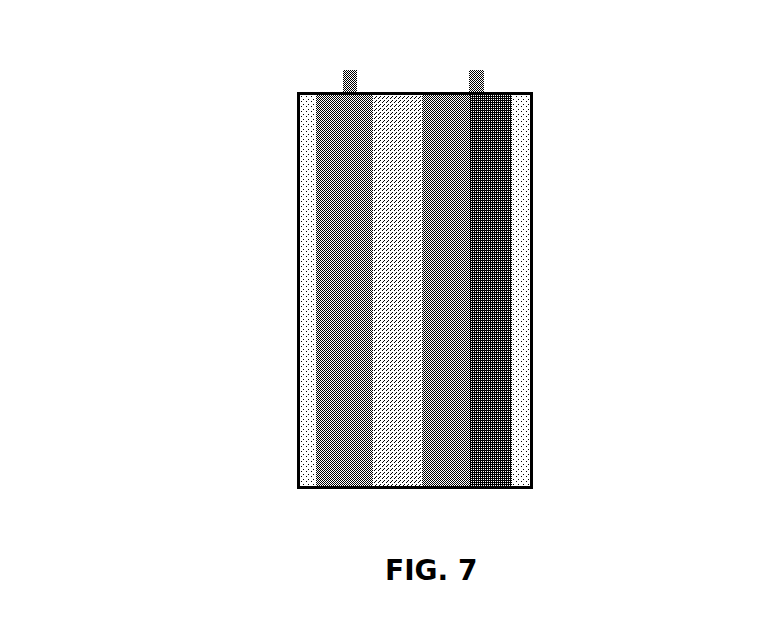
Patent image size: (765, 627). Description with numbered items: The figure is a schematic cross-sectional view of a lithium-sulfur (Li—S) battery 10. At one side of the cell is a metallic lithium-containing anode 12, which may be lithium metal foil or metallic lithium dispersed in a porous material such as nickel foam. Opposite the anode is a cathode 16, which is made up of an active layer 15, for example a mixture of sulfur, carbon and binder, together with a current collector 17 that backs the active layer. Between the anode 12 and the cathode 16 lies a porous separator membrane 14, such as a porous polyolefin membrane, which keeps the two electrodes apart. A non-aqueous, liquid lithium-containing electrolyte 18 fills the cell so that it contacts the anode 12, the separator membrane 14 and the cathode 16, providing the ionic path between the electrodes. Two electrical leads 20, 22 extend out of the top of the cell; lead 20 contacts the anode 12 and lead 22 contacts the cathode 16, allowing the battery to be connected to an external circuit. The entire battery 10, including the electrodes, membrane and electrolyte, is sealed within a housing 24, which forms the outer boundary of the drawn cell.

The lithium-sulfur battery 10 is at (135, 176).
The metallic lithium-containing anode 12 is at (333, 105).
The porous separator membrane 14 is at (400, 118).
The active layer 15 is at (453, 465).
The cathode 16 is at (513, 135).
The current collector 17 is at (500, 330).
The lithium-containing electrolyte 18 is at (302, 250).
The electrical lead 20 is at (352, 72).
The electrical lead 22 is at (476, 70).
The housing 24 is at (298, 163).